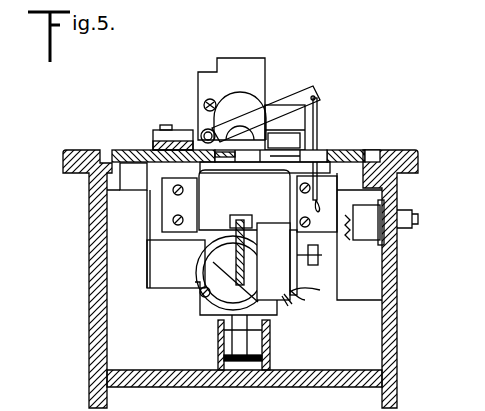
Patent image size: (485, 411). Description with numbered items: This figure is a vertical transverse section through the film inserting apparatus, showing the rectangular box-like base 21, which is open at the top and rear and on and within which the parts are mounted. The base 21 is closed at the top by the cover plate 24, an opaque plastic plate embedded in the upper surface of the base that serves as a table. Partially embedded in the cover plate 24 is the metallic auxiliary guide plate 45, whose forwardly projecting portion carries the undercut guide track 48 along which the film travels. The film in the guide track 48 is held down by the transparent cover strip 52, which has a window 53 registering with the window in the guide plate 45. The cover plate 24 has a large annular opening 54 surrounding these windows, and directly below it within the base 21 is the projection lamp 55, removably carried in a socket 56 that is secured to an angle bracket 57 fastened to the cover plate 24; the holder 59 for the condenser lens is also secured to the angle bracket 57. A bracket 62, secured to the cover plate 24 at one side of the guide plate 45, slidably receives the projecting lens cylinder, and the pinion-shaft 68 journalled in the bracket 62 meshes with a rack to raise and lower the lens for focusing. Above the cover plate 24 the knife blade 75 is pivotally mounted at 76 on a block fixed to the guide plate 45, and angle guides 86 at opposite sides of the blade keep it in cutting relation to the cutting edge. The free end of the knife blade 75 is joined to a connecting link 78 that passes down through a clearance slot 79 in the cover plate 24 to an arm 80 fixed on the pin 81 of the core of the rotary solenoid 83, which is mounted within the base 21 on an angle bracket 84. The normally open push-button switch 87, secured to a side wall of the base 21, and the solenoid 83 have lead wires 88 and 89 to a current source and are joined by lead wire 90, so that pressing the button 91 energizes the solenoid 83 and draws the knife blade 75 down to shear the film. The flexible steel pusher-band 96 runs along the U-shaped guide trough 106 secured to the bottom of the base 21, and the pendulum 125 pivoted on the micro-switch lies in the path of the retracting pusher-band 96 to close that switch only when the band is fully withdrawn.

The base 21 is at (95, 266).
The cover plate 24 is at (360, 150).
The auxiliary guide plate 45 is at (218, 162).
The guide track 48 is at (272, 162).
The cover strip 52 is at (272, 141).
The window 53 is at (246, 162).
The annular opening 54 is at (198, 167).
The projection lamp 55 is at (215, 297).
The socket 56 is at (205, 268).
The angle bracket 57 is at (147, 240).
The holder 59 is at (197, 234).
The bracket 62 is at (268, 77).
The pinion-shaft 68 is at (205, 102).
The knife blade 75 is at (303, 98).
The pivot 76 is at (206, 133).
The connecting link 78 is at (318, 117).
The clearance slot 79 is at (322, 150).
The arm 80 is at (332, 205).
The pin 81 is at (311, 258).
The rotary solenoid 83 is at (267, 232).
The angle bracket 84 is at (233, 262).
The angle guides 86 is at (278, 128).
The push-button electrical switch 87 is at (366, 230).
The lead wire 88 is at (350, 222).
The lead wire 89 is at (292, 310).
The lead wire 90 is at (344, 268).
The button 91 is at (414, 218).
The pusher member 96 is at (240, 354).
The guide trough 106 is at (272, 343).
The pendulum 125 is at (240, 330).